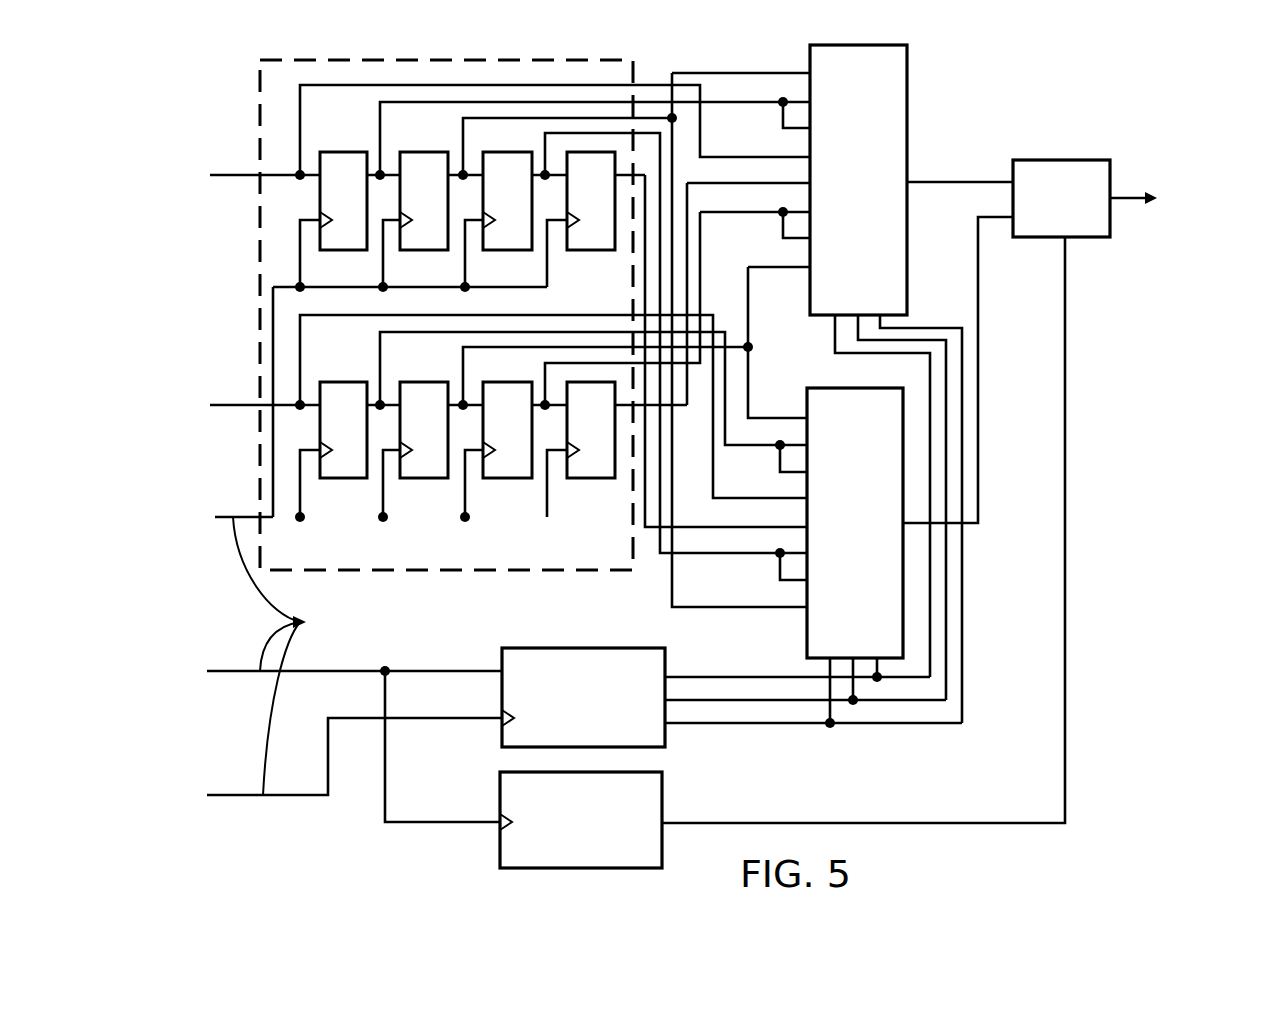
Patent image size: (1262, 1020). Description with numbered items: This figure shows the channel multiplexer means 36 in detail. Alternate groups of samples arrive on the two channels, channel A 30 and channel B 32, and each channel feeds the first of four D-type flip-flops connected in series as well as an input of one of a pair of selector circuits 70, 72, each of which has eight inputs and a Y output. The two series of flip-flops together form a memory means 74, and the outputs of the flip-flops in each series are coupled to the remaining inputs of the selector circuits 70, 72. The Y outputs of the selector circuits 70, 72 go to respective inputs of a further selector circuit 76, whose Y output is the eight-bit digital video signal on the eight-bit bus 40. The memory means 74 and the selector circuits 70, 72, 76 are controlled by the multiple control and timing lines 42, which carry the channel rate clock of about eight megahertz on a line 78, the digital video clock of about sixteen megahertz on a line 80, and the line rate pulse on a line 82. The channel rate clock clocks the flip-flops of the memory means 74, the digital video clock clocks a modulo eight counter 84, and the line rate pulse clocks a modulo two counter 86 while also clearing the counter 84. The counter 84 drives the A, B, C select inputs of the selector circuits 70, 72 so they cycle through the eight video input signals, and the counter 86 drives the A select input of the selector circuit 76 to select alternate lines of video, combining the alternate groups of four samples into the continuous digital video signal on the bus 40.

The channel A digital video input (8-bit) 30 is at (242, 175).
The channel B digital video input (8-bit) 32 is at (240, 405).
The channel multiplexer means 36 is at (710, 58).
The 8-bit bus 40 is at (1123, 198).
The multiple control and timing lines 42 is at (284, 656).
The selector circuit 70 is at (890, 112).
The selector circuit 72 is at (838, 398).
The memory means 74 is at (473, 315).
The selector circuit 76 is at (1055, 173).
The line 78 is at (245, 517).
The line 80 is at (243, 795).
The line 82 is at (243, 671).
The modulo 8 counter 84 is at (553, 658).
The modulo 2 counter 86 is at (652, 800).